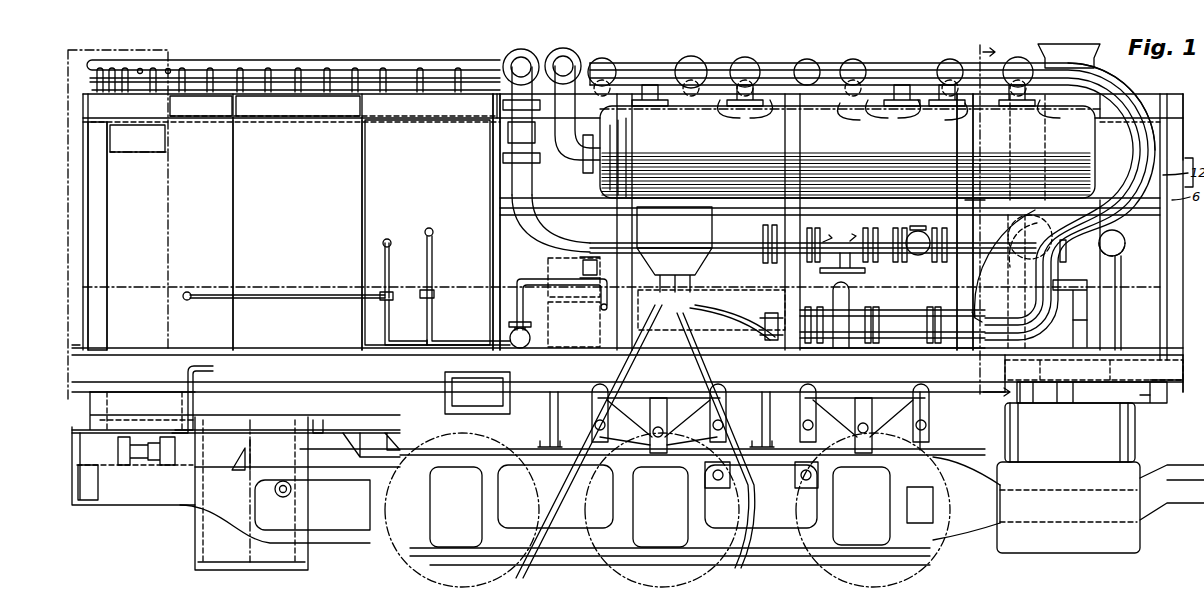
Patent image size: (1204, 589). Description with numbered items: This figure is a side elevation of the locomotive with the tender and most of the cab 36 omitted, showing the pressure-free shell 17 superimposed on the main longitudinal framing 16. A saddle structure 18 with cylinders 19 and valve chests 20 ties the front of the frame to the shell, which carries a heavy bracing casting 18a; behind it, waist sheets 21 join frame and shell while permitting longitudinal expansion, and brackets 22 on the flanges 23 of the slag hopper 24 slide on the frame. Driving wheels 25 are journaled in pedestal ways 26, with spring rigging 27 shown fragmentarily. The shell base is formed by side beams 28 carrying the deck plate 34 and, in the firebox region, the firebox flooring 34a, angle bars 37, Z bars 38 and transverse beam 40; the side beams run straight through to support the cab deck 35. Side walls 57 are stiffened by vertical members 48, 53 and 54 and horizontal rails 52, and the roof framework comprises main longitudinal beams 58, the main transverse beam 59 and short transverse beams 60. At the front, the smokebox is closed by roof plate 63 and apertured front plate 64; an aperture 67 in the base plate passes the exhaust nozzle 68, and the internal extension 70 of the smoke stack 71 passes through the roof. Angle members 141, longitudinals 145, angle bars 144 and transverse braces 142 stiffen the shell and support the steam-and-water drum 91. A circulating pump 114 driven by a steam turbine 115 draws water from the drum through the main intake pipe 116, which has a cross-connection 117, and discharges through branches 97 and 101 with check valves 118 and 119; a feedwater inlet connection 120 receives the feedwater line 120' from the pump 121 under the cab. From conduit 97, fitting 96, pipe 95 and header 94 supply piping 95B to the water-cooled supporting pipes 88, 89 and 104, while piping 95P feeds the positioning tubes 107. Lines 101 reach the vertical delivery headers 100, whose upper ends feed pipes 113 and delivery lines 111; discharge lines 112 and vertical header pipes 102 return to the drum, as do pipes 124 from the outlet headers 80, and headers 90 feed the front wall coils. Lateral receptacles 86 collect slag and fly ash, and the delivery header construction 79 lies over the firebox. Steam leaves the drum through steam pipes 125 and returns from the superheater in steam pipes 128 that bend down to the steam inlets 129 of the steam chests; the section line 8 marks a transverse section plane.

The delivery header construction 79 is at (197, 62).
The main transverse beam 59 is at (86, 112).
The main longitudinal beams 58 is at (201, 106).
The short transverse beams 60 is at (236, 106).
The side longitudinal rails 52 is at (290, 124).
The pressure-free shell 17 is at (427, 232).
The cab 36 is at (165, 203).
The vertical members 48 is at (107, 228).
The vertical members 53 is at (235, 237).
The transverse water-cooled supporting pipe 88 is at (386, 258).
The transverse supporting pipe 104 is at (429, 228).
The vertical members 54 is at (493, 207).
The cab deck 35 is at (78, 345).
The aperture 67 is at (186, 300).
The piping 95B is at (280, 299).
The transverse supporting pipe 89 is at (428, 343).
The T-shaped connection 94 is at (510, 332).
The piping 95 is at (518, 300).
The fitting 96 is at (548, 252).
The pump delivery conduit 97 is at (565, 232).
The side beams 28 is at (627, 370).
The feedwater line 120' is at (176, 395).
The angle bars 37 is at (312, 388).
The firebox flooring 34a is at (147, 420).
The waist sheets 21 is at (76, 455).
The pump 121 is at (122, 465).
The slag hopper 24 is at (251, 493).
The brackets 22 is at (238, 452).
The flanges 23 is at (252, 450).
The transverse beam 40 is at (320, 433).
The Z bars 38 is at (350, 433).
The lateral receptacles 86 is at (477, 393).
The main longitudinal framing 16 is at (560, 458).
The pedestal ways 26 is at (480, 505).
The driving wheels 25 is at (510, 572).
The spring rigging 27 is at (640, 407).
The valve chests 20 is at (1070, 432).
The cylinders 19 is at (1100, 507).
The steam inlets 129 is at (1072, 400).
The saddle structure 18 is at (1130, 395).
The bracing casting 18a is at (1160, 386).
The longitudinally extending angle bars 144 is at (955, 375).
The supplemental transverse braces 142 is at (940, 417).
The section line 8 is at (987, 217).
The steam-and-water drum 91 is at (847, 152).
The angle members 141 is at (974, 136).
The longitudinals 145 is at (680, 207).
The sand pipe 95P is at (640, 325).
The water-cooled positioning tubes 107 is at (692, 305).
The steam turbine 115 is at (768, 342).
The steam pipes 128 is at (715, 62).
The steam pipes 125 is at (660, 103).
The discharge lines 112 is at (760, 115).
The delivery lines 111 is at (850, 112).
The pipes 113 is at (1098, 110).
The smoke stack 71 is at (1038, 50).
The roof plate 63 is at (1150, 92).
The apertured front plate 64 is at (1178, 137).
The internal extension of the smoke stack 70 is at (1125, 238).
The headers 90 is at (521, 122).
The pipes 124 is at (568, 155).
The outlet headers 80 is at (586, 90).
The check valve 118 is at (772, 260).
The check valve 119 is at (912, 253).
The feedwater inlet connection 120 is at (840, 256).
The circulating pump 114 is at (838, 343).
The deck plate 34 is at (900, 358).
The pump delivery lines 101 is at (1002, 232).
The cross-connection 117 is at (1050, 228).
The vertical header pipes 102 is at (1000, 262).
The main intake pipe 116 is at (990, 312).
The side walls 57 is at (1127, 275).
The vertical delivery headers 100 is at (1118, 302).
The exhaust nozzle 68 is at (1090, 325).